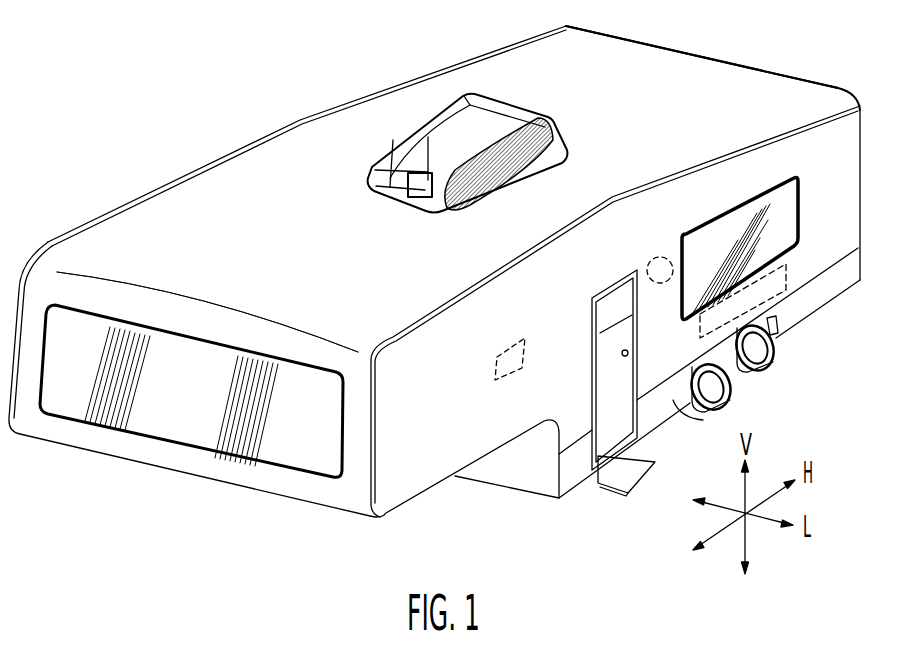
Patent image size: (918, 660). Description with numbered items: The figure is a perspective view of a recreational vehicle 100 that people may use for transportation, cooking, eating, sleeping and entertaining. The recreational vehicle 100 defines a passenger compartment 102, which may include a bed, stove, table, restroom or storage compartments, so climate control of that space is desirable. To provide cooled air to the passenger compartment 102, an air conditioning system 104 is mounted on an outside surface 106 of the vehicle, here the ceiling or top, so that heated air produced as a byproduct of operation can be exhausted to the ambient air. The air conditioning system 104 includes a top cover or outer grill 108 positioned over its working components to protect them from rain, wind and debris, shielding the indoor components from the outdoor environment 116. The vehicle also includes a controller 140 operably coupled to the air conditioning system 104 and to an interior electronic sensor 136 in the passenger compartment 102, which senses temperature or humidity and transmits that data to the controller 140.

The recreational vehicle 100 is at (153, 78).
The passenger compartment 102 is at (621, 98).
The air conditioning system 104 is at (498, 125).
The outside surface 106 is at (727, 80).
The outer grill 108 is at (463, 101).
The outdoor environment 116 is at (307, 61).
The interior electronic sensor 136 is at (656, 257).
The controller 140 is at (494, 379).